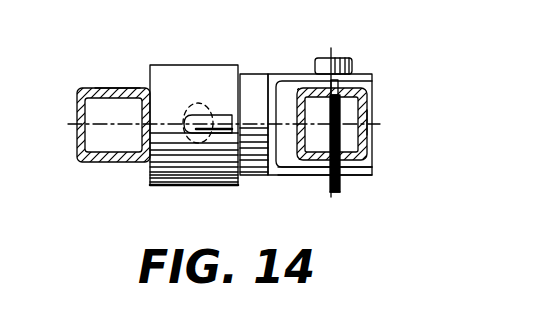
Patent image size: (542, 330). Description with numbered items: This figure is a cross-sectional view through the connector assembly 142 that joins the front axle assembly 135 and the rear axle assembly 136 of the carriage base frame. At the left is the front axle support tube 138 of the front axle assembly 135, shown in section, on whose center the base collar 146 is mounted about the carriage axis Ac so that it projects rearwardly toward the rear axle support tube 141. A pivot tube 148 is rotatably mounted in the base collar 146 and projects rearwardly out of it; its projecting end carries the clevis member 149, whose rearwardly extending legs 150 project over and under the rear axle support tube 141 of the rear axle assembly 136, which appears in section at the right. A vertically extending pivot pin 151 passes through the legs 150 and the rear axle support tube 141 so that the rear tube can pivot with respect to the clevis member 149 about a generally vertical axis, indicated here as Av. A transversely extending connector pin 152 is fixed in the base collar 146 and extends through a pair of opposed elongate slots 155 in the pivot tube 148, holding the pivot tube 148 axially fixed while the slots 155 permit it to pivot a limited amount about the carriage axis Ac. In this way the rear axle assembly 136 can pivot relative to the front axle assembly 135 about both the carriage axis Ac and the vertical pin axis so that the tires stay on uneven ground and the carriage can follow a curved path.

The front axle assembly 135 is at (100, 167).
The rear axle assembly 136 is at (377, 97).
The front axle support tube 138 is at (103, 88).
The rear axle support tube 141 is at (372, 108).
The connector assembly 142 is at (157, 63).
The base collar 146 is at (199, 179).
The pivot tube 148 is at (246, 176).
The clevis member 149 is at (295, 75).
The legs 150 is at (356, 73).
The pivot pin 151 is at (330, 197).
The connector pin 152 is at (213, 134).
The elongate slots 155 is at (212, 88).
The carriage axis Ac is at (372, 122).
The bolt area Av is at (333, 197).